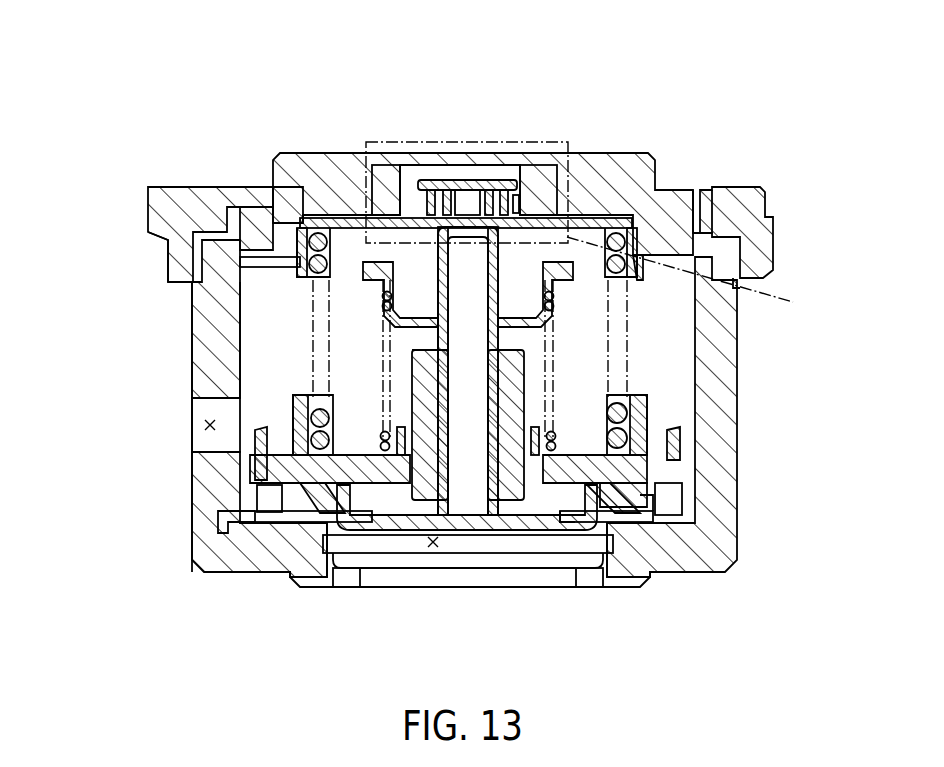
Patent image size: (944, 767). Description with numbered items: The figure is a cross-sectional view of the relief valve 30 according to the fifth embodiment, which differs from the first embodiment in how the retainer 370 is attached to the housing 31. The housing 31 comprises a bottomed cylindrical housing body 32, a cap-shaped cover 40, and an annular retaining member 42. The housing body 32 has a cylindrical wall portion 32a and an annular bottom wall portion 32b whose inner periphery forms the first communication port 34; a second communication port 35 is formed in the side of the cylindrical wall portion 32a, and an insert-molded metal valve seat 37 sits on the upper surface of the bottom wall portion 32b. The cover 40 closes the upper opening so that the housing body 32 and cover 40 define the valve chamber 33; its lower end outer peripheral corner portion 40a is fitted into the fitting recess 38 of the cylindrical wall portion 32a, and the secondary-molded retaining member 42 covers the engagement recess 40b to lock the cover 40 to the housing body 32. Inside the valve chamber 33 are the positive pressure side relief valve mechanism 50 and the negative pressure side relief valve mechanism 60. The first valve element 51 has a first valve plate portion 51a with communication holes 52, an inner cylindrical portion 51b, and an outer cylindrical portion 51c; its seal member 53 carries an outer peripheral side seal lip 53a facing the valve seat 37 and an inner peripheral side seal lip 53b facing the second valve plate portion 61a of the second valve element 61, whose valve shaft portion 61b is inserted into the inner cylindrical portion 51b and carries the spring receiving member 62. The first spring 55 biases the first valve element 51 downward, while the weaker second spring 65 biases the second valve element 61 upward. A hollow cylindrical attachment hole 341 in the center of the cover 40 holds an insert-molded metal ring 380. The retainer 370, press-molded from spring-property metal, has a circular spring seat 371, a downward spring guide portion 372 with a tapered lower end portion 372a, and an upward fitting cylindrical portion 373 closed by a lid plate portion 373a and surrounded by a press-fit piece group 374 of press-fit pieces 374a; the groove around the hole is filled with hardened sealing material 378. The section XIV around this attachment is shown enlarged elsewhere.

The relief valve 30 is at (157, 128).
The housing 31 is at (165, 284).
The housing body 32 is at (190, 330).
The cylindrical wall portion 32a is at (727, 463).
The bottom wall portion 32b is at (673, 570).
The valve chamber 33 is at (235, 365).
The first communication port 34 is at (433, 547).
The second communication port 35 is at (203, 426).
The valve seat 37 is at (262, 530).
The fitting recess 38 is at (768, 222).
The cover 40 is at (337, 148).
The lower end outer peripheral corner portion 40a is at (247, 205).
The engagement recess 40b is at (660, 205).
The retaining member 42 is at (153, 205).
The positive pressure side relief valve mechanism 50 is at (662, 415).
The first valve element 51 is at (652, 402).
The first valve plate portion 51a is at (660, 498).
The inner cylindrical portion 51b is at (417, 387).
The outer cylindrical portion 51c is at (640, 428).
The communication holes 52 is at (420, 495).
The seal member 53 is at (270, 496).
The outer peripheral side seal lip 53a is at (640, 525).
The inner peripheral side seal lip 53b is at (578, 525).
The first spring 55 is at (303, 200).
The negative pressure side relief valve mechanism 60 is at (518, 540).
The second valve element 61 is at (502, 330).
The second valve plate portion 61a is at (400, 505).
The valve shaft portion 61b is at (437, 345).
The spring receiving member 62 is at (557, 290).
The second spring 65 is at (343, 527).
The attachment hole 341 is at (398, 183).
The retainer 370 is at (608, 210).
The spring seat 371 is at (625, 225).
The spring guide portion 372 is at (641, 255).
The lower end portion 372a is at (150, 228).
The fitting cylindrical portion 373 is at (478, 180).
The lid plate portion 373a is at (455, 180).
The press-fit piece group 374 is at (547, 190).
The press-fit pieces 374a is at (428, 175).
The sealing material 378 is at (515, 185).
The metal ring 380 is at (536, 190).
The section XIV is at (702, 280).